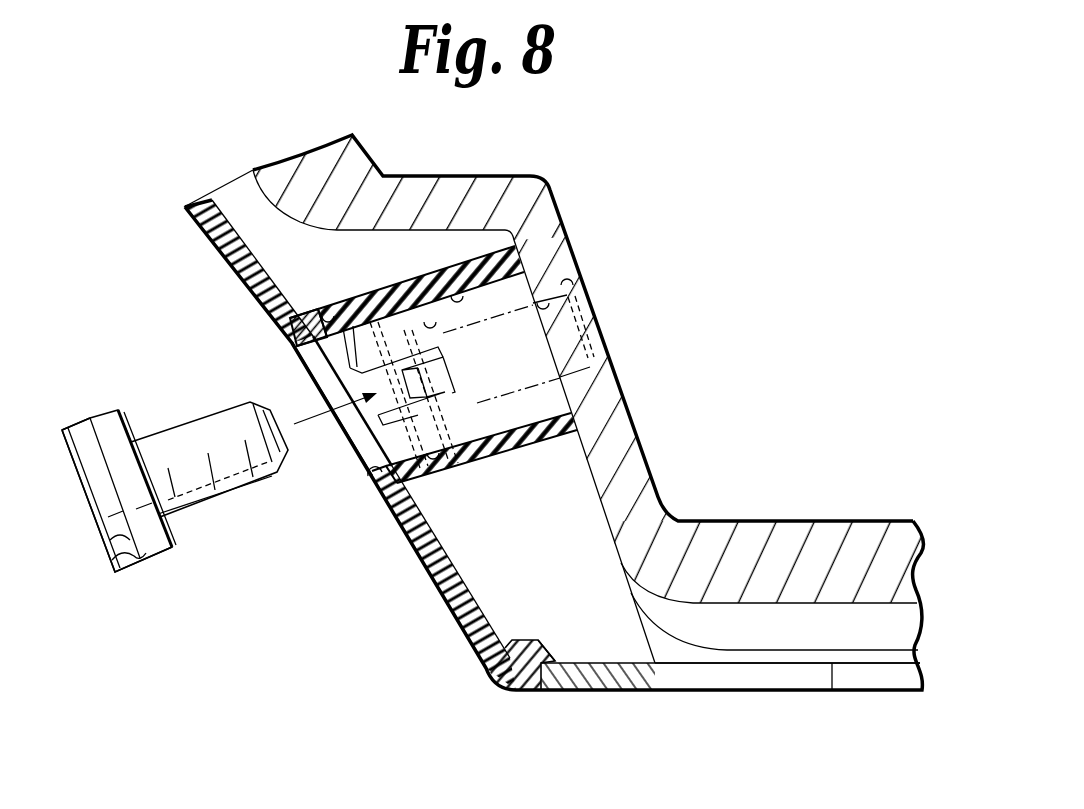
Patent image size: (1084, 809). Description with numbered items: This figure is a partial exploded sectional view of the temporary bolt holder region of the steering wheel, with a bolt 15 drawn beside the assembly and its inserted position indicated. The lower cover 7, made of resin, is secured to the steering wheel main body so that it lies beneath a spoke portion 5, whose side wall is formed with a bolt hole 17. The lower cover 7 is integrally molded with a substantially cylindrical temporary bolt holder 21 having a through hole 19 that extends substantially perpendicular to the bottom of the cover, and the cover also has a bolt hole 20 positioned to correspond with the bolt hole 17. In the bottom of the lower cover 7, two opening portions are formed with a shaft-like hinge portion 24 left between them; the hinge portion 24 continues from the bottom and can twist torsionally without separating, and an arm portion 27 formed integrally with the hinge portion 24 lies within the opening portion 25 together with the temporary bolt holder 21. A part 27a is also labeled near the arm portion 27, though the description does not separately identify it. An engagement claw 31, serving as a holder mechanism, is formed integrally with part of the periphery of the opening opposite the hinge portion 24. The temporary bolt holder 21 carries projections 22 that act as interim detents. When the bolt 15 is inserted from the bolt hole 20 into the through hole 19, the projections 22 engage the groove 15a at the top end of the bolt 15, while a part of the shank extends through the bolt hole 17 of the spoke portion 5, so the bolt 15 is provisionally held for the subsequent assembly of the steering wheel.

The spoke portion 5 is at (480, 176).
The lower cover 7 is at (220, 260).
The bolt 15 is at (164, 400).
The groove 15a is at (80, 426).
The bolt hole 17 is at (576, 273).
The through hole 19 is at (447, 273).
The bolt hole 20 is at (376, 478).
The temporary bolt holder 21 is at (342, 311).
The projection 22 is at (405, 403).
The hinge portion 24 is at (630, 690).
The opening portion 25 is at (831, 692).
The arm portion 27 is at (476, 484).
The corner member 27a is at (552, 692).
The engagement claw 31 is at (554, 658).